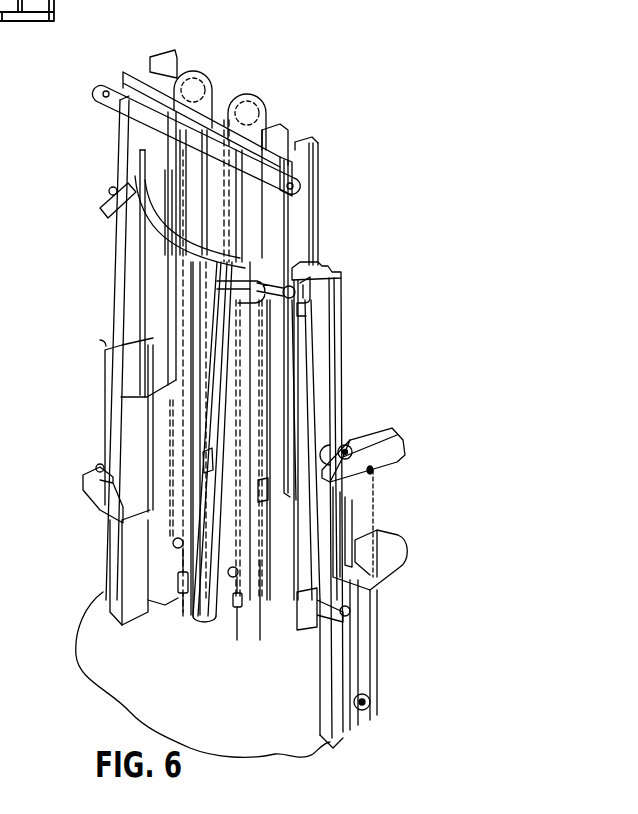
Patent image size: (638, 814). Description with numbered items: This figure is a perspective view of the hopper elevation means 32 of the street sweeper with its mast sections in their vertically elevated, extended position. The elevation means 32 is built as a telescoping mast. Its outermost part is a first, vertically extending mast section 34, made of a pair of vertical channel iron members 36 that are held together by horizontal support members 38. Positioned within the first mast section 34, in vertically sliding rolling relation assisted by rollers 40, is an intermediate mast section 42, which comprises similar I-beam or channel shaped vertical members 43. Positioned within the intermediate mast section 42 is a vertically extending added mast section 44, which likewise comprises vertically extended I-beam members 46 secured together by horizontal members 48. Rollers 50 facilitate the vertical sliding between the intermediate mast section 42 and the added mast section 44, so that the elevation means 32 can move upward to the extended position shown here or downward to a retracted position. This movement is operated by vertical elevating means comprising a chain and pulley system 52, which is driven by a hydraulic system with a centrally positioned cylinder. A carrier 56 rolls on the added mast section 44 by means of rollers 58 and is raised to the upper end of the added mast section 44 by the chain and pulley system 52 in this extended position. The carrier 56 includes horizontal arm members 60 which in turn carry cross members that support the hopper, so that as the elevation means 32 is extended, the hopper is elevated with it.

The hopper elevation means 32 is at (112, 275).
The first mast section 34 is at (128, 572).
The vertical channel iron members 36 is at (112, 547).
The horizontal support members 38 is at (385, 536).
The rollers 40 is at (352, 450).
The intermediate mast section 42 is at (345, 340).
The vertical members 43 is at (326, 378).
The added mast section 44 is at (325, 199).
The I-beam members 46 is at (160, 303).
The horizontal members 48 is at (152, 70).
The rollers 50 is at (318, 255).
The chain and pulley system 52 is at (218, 106).
The carrier 56 is at (278, 140).
The rollers 58 is at (108, 85).
The horizontal arm members 60 is at (108, 208).